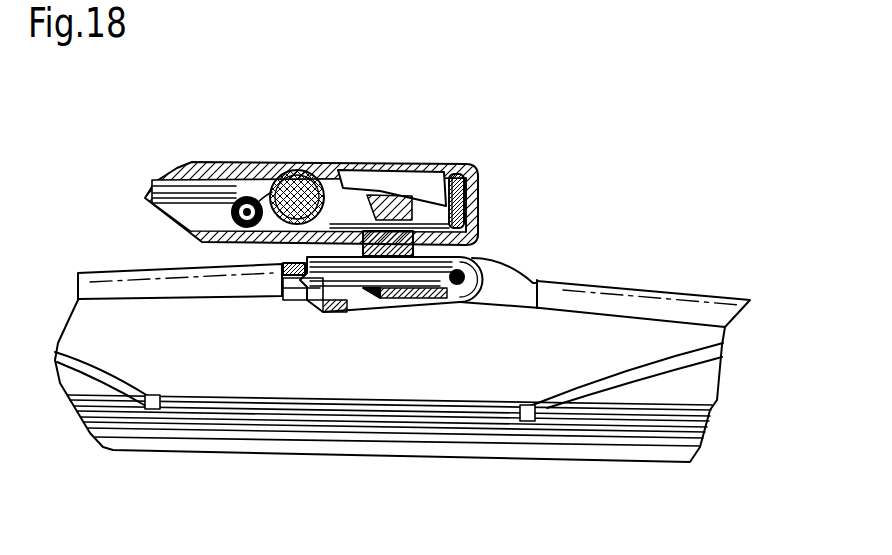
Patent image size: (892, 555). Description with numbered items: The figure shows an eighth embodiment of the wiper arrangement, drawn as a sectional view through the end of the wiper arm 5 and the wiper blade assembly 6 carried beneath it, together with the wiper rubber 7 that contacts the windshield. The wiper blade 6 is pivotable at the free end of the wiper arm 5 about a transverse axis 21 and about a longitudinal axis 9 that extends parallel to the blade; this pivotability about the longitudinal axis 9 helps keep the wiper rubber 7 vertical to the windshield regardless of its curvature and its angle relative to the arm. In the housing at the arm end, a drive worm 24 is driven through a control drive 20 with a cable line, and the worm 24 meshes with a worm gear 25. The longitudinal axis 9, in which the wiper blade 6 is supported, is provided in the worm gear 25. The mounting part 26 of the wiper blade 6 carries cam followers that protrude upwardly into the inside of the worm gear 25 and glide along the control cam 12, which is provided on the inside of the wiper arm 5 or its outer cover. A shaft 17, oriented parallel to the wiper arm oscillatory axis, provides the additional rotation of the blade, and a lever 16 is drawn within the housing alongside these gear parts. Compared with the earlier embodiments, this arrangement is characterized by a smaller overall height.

The wiper arm 5 is at (180, 210).
The wiper blade assembly 6 is at (100, 283).
The wiper rubber 7 is at (603, 423).
The longitudinal axis 9 is at (467, 223).
The control cam 12 is at (400, 195).
The lever 16 is at (358, 170).
The shaft 17 is at (383, 178).
The control drive 20 is at (207, 162).
The transverse axis 21 is at (460, 303).
The drive worm 24 is at (295, 175).
The worm gear 25 is at (453, 183).
The mounting part 26 is at (475, 230).